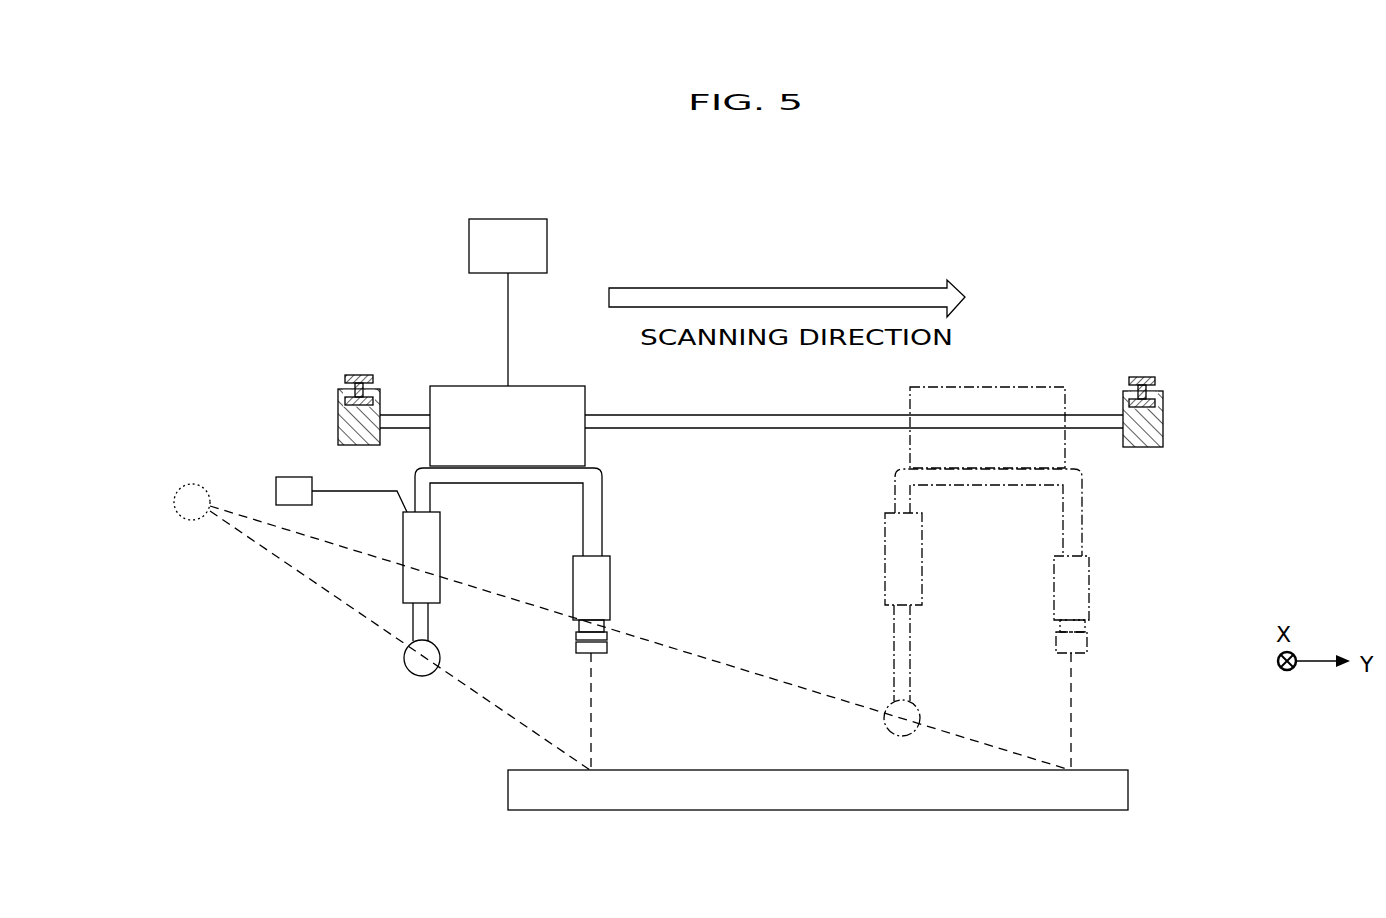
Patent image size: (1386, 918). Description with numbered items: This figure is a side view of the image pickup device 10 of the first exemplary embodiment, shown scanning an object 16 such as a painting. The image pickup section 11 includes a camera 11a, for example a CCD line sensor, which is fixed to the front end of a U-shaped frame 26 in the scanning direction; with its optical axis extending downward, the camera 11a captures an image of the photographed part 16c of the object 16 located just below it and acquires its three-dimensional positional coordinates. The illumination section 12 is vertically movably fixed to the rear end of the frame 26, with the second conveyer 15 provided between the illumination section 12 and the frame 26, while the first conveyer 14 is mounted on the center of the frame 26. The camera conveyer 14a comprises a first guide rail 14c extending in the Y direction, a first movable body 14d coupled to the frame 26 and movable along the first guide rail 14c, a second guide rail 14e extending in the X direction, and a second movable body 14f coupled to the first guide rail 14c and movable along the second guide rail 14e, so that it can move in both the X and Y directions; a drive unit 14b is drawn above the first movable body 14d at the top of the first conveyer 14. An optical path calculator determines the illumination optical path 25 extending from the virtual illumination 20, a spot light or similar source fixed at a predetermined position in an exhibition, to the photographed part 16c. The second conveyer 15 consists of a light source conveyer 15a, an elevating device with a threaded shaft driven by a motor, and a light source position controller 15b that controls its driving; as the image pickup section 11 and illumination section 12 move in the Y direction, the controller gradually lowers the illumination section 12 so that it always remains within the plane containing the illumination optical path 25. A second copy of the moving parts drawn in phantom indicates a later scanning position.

The image pickup device 10 is at (338, 226).
The image pickup section 11 is at (612, 582).
The camera 11a is at (608, 645).
The illumination section 12 is at (405, 660).
The first conveyer 14 is at (571, 192).
The camera conveyer 14a is at (544, 333).
The drive unit 14b is at (548, 249).
The first guide rail 14c is at (850, 414).
The first movable body 14d is at (567, 393).
The second guide rail 14e is at (352, 375).
The second movable body 14f is at (340, 400).
The second conveyer 15 is at (220, 427).
The light source conveyer 15a is at (405, 522).
The light source position controller 15b is at (290, 476).
The object 16 is at (1148, 790).
The photographed part 16c is at (586, 792).
The virtual illumination 20 is at (177, 493).
The illumination optical path 25 is at (324, 598).
The frame 26 is at (524, 485).